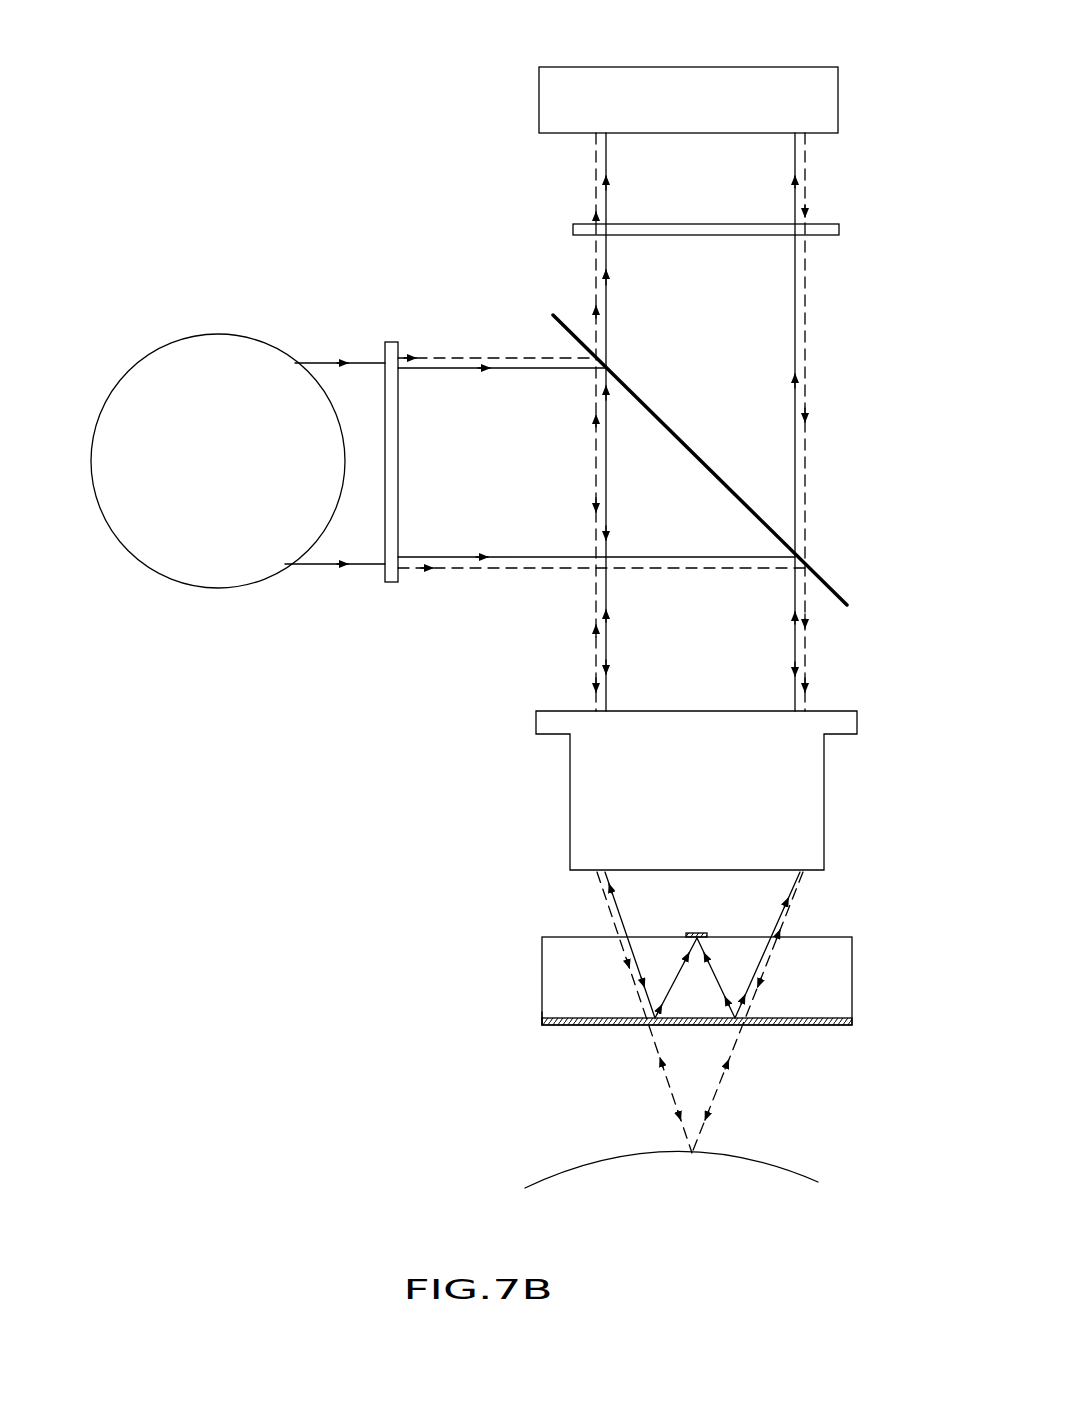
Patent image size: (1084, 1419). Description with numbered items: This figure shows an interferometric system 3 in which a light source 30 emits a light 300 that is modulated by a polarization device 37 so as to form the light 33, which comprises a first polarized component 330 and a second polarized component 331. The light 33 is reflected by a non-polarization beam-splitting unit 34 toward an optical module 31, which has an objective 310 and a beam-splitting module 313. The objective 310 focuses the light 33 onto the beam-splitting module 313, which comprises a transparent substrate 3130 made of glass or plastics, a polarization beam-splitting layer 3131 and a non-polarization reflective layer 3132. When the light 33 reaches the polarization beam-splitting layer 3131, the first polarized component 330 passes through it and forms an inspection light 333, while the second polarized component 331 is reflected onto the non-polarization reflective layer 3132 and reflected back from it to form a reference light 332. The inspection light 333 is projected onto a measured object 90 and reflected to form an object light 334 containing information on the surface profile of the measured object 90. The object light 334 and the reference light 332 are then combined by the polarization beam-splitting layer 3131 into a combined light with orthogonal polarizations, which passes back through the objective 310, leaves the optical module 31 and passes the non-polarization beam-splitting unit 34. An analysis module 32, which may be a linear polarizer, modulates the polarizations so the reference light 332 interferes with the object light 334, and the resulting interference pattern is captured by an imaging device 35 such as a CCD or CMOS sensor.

The interferometric system 3 is at (212, 88).
The light source 30 is at (212, 465).
The light 300 is at (347, 361).
The polarization device 37 is at (390, 584).
The light 33 is at (418, 290).
The first polarized component 330 is at (416, 356).
The second polarized component 331 is at (479, 366).
The reference light 332 is at (792, 181).
The inspection light 333 is at (676, 1119).
The object light 334 is at (594, 213).
The non-polarization beam-splitting unit 34 is at (720, 487).
The analysis module 32 is at (826, 234).
The imaging device 35 is at (840, 102).
The optical module 31 is at (432, 967).
The objective 310 is at (570, 803).
The beam-splitting module 313 is at (541, 988).
The substrate 3130 is at (542, 1012).
The polarization beam-splitting layer 3131 is at (852, 1020).
The non-polarization reflective layer 3132 is at (697, 934).
The measured object 90 is at (684, 1201).